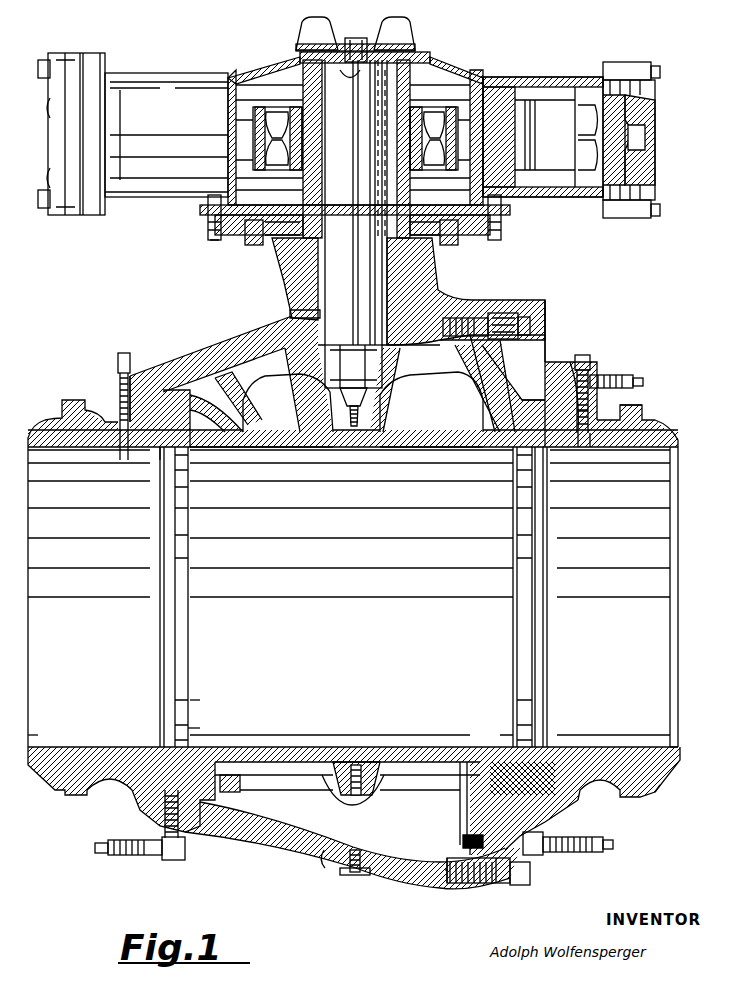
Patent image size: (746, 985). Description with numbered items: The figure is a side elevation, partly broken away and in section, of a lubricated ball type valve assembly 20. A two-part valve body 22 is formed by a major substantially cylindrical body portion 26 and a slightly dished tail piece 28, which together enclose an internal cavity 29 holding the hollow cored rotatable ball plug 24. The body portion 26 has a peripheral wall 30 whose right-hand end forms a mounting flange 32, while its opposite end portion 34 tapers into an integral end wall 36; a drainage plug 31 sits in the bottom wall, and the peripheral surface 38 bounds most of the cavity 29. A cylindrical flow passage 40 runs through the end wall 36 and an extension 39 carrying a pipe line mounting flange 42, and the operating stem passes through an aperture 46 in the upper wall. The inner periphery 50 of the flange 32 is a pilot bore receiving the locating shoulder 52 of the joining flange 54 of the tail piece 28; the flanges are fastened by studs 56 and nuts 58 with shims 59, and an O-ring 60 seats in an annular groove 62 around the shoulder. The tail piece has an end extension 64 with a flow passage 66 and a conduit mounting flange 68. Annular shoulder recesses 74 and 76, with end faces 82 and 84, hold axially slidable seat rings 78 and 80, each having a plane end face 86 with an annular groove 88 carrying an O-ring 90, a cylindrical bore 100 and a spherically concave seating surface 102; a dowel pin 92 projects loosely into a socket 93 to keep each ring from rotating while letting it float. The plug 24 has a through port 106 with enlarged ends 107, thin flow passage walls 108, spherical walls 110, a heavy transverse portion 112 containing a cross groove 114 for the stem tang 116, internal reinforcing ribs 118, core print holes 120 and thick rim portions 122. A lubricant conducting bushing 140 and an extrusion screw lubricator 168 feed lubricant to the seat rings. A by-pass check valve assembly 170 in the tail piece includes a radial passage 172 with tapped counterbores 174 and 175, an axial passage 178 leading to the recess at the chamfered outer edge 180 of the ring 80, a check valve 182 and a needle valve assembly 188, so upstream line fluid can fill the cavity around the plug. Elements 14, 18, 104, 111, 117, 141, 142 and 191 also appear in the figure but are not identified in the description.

The valve assembly 20 is at (158, 310).
The motor housing 14 is at (282, 290).
The aperture 46 is at (290, 314).
The drive hub 18 is at (420, 315).
The valve body 22 is at (482, 312).
The mounting flange 32 is at (470, 316).
The stud 56 is at (512, 315).
The nut 58 is at (528, 318).
The ball plug 24 is at (348, 449).
The major body portion 26 is at (225, 352).
The annular shoulder recess 74 is at (178, 395).
The sealing O-ring 90 is at (550, 430).
The spherically concave seating surface 102 is at (465, 738).
The seat ring 78 is at (210, 398).
The web 111 is at (252, 400).
The holes 120 is at (363, 402).
The web 142 is at (315, 400).
The web 117 is at (378, 400).
The web 141 is at (458, 405).
The cross groove 114 is at (353, 385).
The tang 116 is at (400, 352).
The sealing O-ring 60 is at (470, 352).
The annular shoulder recess 76 is at (545, 372).
The seat ring 80 is at (515, 402).
The chamfered outer edge 180 is at (578, 378).
The axial passage 178 is at (563, 404).
The by-pass check valve assembly 170 is at (583, 344).
The extrusion screw lubricator 168 is at (590, 352).
The high pressure needle valve assembly 188 is at (590, 350).
The tapped counterbore 175 is at (610, 375).
The tapped counterbore 174 is at (590, 395).
The conduit mounting flange 68 is at (632, 405).
The bolt 191 is at (106, 390).
The end face 82 is at (158, 450).
The plate segment 104 is at (220, 447).
The flow passage defining wall 108 is at (285, 448).
The through port 106 is at (420, 448).
The radial passage 172 is at (580, 447).
The check valve 182 is at (595, 448).
The end face 84 is at (547, 450).
The end face 86 is at (560, 450).
The axial dowel pin 92 is at (580, 750).
The annular groove 88 is at (158, 748).
The bore 100 is at (190, 715).
The ends of through port 107 is at (192, 732).
The extension 39 is at (38, 735).
The spherical wall 110 is at (290, 774).
The thick rim portion 122 is at (238, 792).
The internal rib reinforcing structure 118 is at (360, 796).
The heavy transverse portion 112 is at (440, 790).
The cylindrical flow passage 40 is at (45, 783).
The pipe line mounting flange 42 is at (60, 798).
The end wall 36 is at (128, 800).
The lubricant conducting bushing 140 is at (160, 822).
The internal cavity 29 is at (282, 850).
The end portion 34 is at (248, 845).
The peripheral surface 38 is at (320, 866).
The peripheral wall 30 is at (405, 870).
The drainage plug 31 is at (357, 855).
The tail piece 28 is at (582, 782).
The end extension 64 is at (655, 778).
The flow passage 66 is at (678, 755).
The socket 93 is at (560, 805).
The annular groove 62 is at (470, 835).
The inner periphery 50 is at (470, 842).
The locating shoulder 52 is at (450, 890).
The shims 59 is at (478, 890).
The joining flange 54 is at (500, 888).